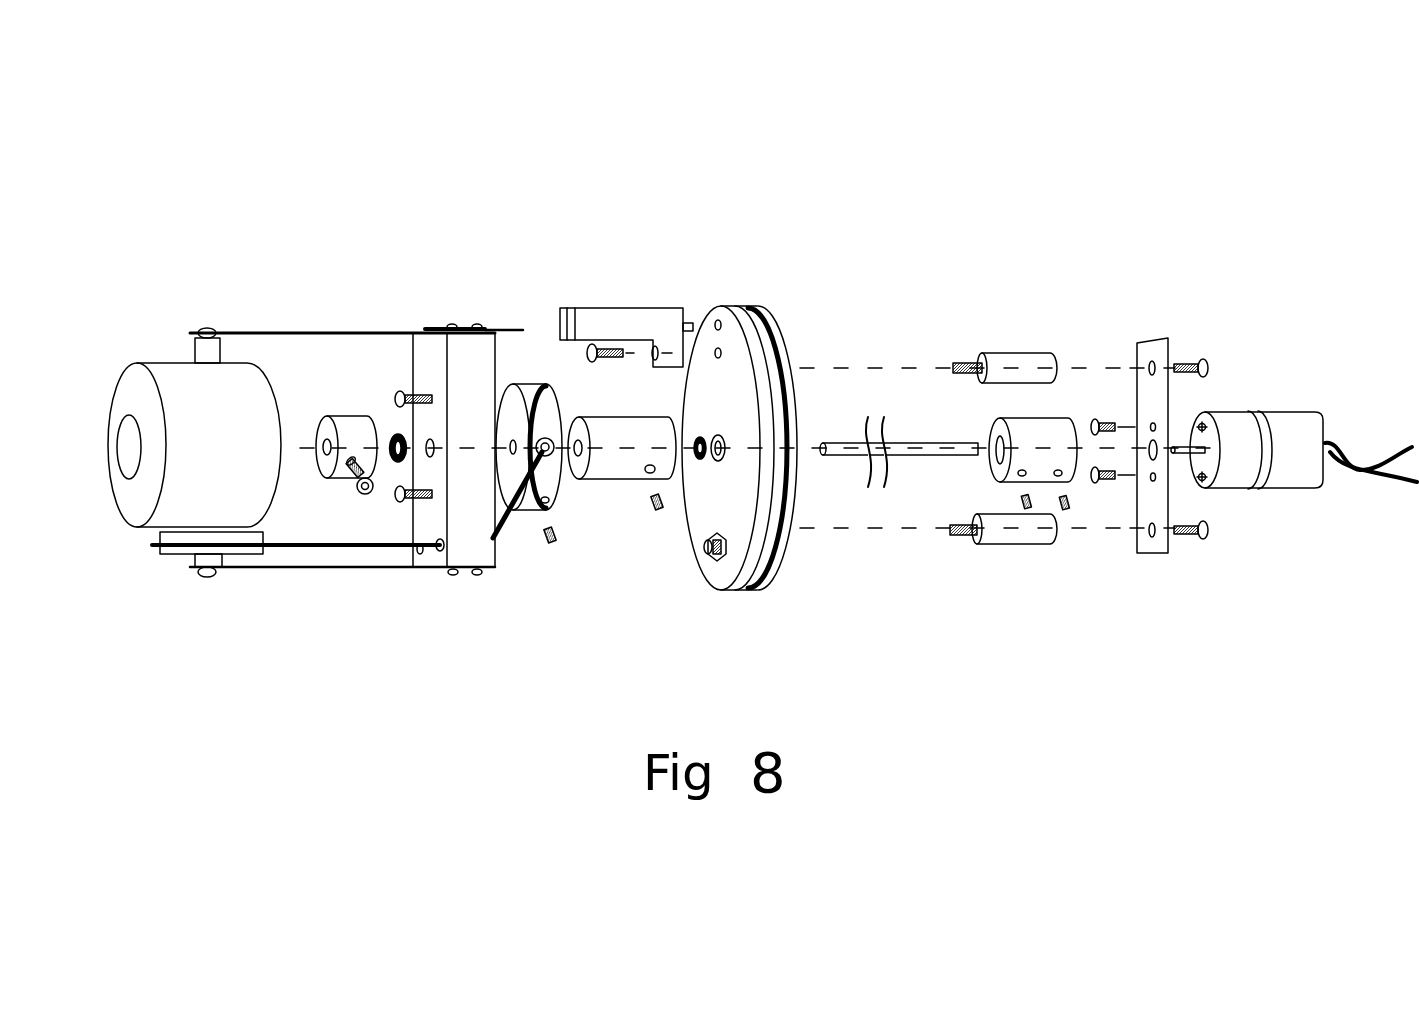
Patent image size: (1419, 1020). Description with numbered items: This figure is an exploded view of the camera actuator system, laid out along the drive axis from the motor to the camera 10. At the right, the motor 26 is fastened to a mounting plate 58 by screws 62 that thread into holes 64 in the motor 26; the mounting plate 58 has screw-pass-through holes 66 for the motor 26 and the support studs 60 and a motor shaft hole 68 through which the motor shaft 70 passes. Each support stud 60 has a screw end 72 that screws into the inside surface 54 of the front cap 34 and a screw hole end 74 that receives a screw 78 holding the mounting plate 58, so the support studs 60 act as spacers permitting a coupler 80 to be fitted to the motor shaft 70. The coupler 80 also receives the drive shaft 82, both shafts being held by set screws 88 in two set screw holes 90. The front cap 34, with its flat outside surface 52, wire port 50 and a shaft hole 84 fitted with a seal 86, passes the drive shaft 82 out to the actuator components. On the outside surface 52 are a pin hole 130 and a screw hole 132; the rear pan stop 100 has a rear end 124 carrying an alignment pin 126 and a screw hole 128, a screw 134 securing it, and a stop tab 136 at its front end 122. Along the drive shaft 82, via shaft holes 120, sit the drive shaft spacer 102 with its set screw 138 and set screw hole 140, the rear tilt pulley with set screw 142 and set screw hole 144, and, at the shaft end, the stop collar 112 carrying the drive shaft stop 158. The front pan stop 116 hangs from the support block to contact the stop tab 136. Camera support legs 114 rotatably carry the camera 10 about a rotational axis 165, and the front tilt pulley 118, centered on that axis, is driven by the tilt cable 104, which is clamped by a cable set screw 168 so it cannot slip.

The camera 10 is at (165, 370).
The motor 26 is at (1288, 413).
The front cap 34 is at (740, 303).
The wire port 50 is at (711, 563).
The outside surface 52 is at (718, 563).
The inside surface 54 is at (794, 344).
The mounting plate 58 is at (1155, 338).
The support studs 60 is at (1008, 353).
The screws 62 is at (1105, 421).
The holes 64 is at (1204, 425).
The screw-pass-through holes 66 is at (1157, 363).
The motor shaft hole 68 is at (1151, 455).
The motor shaft 70 is at (1180, 444).
The screw end 72 is at (965, 360).
The screw hole end 74 is at (1058, 353).
The screw 78 is at (1200, 360).
The coupler 80 is at (1007, 418).
The drive shaft 82 is at (898, 480).
The shaft hole 84 is at (722, 462).
The seal 86 is at (700, 458).
The set screws 88 is at (1063, 508).
The set screw holes 90 is at (1013, 482).
The rear pan stop 100 is at (617, 305).
The drive shaft spacer 102 is at (605, 480).
The tilt cable 104 is at (300, 542).
The stop collar 112 is at (348, 417).
The camera support legs 114 is at (260, 333).
The front pan stop 116 is at (485, 323).
The front tilt pulley 118 is at (165, 557).
The shaft holes 120 is at (520, 325).
The front end 122 is at (583, 305).
The rear end 124 is at (697, 328).
The alignment pin 126 is at (717, 305).
The screw hole 128 is at (585, 352).
The pin hole 130 is at (717, 320).
The screw hole 132 is at (718, 358).
The screw 134 is at (652, 362).
The stop tab 136 is at (559, 308).
The set screw 138 is at (658, 510).
The set screw hole 140 is at (649, 472).
The set screw 142 is at (550, 545).
The set screw hole 144 is at (541, 457).
The drive shaft stop 158 is at (363, 494).
The rotational axis 165 is at (207, 592).
The cable set screw 168 is at (540, 457).